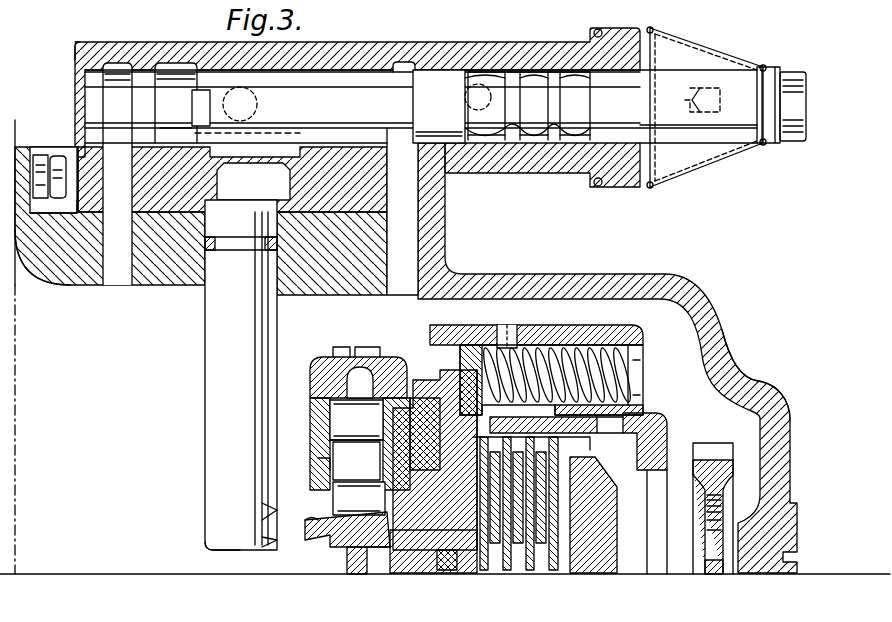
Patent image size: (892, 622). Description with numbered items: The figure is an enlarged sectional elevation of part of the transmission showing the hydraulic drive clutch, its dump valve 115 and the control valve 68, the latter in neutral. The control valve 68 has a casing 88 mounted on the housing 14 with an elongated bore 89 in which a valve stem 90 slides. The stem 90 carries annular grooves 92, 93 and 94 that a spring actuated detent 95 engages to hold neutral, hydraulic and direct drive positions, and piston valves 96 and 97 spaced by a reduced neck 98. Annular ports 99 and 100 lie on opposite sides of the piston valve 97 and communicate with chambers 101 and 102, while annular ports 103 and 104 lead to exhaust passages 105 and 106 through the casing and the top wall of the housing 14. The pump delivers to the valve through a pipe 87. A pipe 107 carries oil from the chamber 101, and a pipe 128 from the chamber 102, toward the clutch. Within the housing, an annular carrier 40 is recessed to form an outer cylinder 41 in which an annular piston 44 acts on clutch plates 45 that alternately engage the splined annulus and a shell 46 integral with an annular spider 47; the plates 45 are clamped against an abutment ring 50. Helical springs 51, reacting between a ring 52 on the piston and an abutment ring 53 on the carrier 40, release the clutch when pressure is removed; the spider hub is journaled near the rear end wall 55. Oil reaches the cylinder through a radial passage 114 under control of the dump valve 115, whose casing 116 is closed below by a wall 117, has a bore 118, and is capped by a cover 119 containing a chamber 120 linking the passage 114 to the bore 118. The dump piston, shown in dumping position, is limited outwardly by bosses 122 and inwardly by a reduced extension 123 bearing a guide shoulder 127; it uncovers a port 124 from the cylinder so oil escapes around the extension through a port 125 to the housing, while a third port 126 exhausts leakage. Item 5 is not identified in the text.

The upper housing 5 is at (118, 14).
The housing 14 is at (540, 274).
The annular carrier 40 is at (347, 560).
The outer annular cylinder 41 is at (428, 566).
The annular piston 44 is at (452, 497).
The clutch plates 45 is at (488, 572).
The shell 46 is at (646, 428).
The annular spider 47 is at (656, 558).
The abutment ring 50 is at (598, 480).
The helical springs 51 is at (622, 341).
The ring 52 is at (494, 345).
The abutment ring 53 is at (592, 325).
The rear end wall 55 is at (762, 392).
The control valve 68 is at (72, 50).
The pipe 87 is at (200, 133).
The casing 88 is at (372, 42).
The elongated bore 89 is at (493, 74).
The valve stem 90 is at (690, 148).
The annular groove 92 is at (483, 137).
The annular groove 93 is at (525, 136).
The annular groove 94 is at (574, 136).
The spring actuated detent 95 is at (479, 84).
The piston valve 96 is at (455, 94).
The piston valve 97 is at (224, 98).
The reduced neck 98 is at (370, 110).
The annular port 99 is at (325, 42).
The annular port 100 is at (171, 62).
The chamber 101 is at (253, 181).
The chamber 102 is at (158, 265).
The annular port 103 is at (408, 60).
The annular port 104 is at (98, 53).
The exhaust passage 105 is at (382, 254).
The exhaust passage 106 is at (76, 284).
The pipe 107 is at (262, 515).
The radial passage 114 is at (373, 562).
The dump valve 115 is at (328, 364).
The casing 116 is at (330, 426).
The wall 117 is at (322, 540).
The bore 118 is at (395, 494).
The cover 119 is at (369, 370).
The chamber 120 is at (435, 445).
The bosses 122 is at (328, 404).
The reduced extension 123 is at (356, 461).
The port 124 is at (428, 434).
The port 125 is at (330, 460).
The third port 126 is at (301, 524).
The guide shoulder 127 is at (391, 438).
The pipe 128 is at (216, 540).